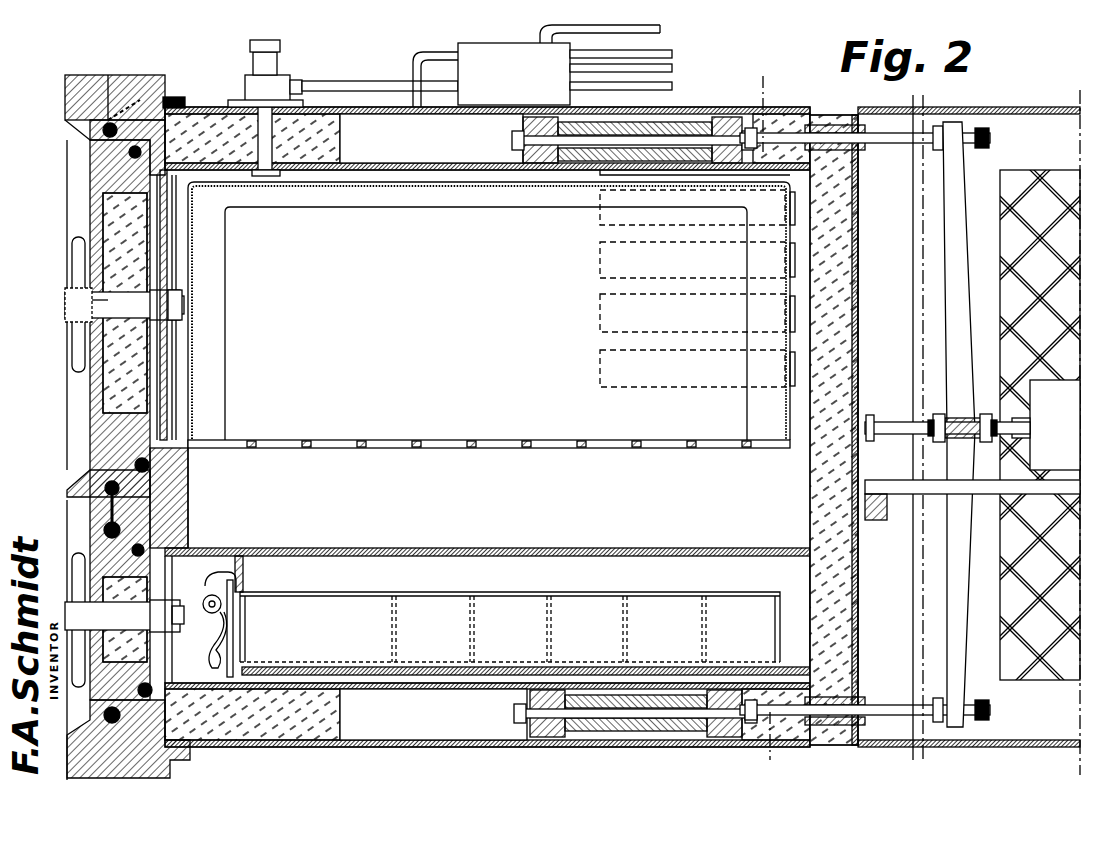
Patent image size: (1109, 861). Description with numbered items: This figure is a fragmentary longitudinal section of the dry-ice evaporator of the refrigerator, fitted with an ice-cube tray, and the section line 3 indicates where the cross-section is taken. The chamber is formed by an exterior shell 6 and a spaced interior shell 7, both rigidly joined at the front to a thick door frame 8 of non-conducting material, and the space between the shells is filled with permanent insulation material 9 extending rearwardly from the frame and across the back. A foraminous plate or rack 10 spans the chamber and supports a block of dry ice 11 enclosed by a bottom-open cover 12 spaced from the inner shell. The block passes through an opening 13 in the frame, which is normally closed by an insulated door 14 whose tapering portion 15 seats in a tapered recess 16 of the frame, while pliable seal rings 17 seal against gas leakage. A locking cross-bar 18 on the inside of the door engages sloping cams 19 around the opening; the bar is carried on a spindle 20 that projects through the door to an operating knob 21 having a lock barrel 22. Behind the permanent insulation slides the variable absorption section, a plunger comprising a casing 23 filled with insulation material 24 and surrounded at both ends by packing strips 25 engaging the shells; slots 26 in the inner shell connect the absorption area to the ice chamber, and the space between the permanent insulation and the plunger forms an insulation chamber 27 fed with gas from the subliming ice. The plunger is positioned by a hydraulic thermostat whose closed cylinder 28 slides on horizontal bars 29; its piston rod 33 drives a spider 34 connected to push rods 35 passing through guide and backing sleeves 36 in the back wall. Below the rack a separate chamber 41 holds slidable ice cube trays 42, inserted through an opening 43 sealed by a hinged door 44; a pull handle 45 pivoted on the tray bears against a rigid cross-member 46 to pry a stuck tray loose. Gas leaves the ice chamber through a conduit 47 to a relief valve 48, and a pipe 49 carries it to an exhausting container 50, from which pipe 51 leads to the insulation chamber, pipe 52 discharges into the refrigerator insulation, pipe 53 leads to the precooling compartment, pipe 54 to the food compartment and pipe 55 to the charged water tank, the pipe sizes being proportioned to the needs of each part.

The section line 3 is at (766, 420).
The exterior shell 6 is at (357, 114).
The interior shell 7 is at (362, 176).
The door frame 8 is at (190, 516).
The insulation material 9 is at (302, 172).
The foraminous plate or rack 10 is at (493, 450).
The block of dry ice 11 is at (418, 395).
The cover 12 is at (466, 188).
The opening 13 is at (188, 402).
The insulated door 14 is at (110, 432).
The tapering portion 15 is at (128, 148).
The tapered recess 16 is at (160, 85).
The seal rings 17 is at (108, 132).
The locking cross-bar 18 is at (165, 282).
The sloping ledges or cams 19 is at (168, 342).
The spindle 20 is at (106, 318).
The operating knob or handle 21 is at (78, 272).
The lock barrel 22 is at (70, 308).
The casing 23 is at (598, 173).
The insulation material 24 is at (516, 130).
The insulation packing strips 25 is at (523, 107).
The slots 26 is at (620, 279).
The insulation chamber 27 is at (428, 150).
The closed cylinder 28 is at (1045, 448).
The horizontal bars 29 is at (905, 494).
The piston rod 33 is at (992, 420).
The spider 34 is at (960, 690).
The push rods 35 is at (882, 132).
The guide and backing sleeves 36 is at (862, 152).
The separate chamber 41 is at (418, 597).
The ice cube trays 42 is at (505, 610).
The opening 43 is at (160, 584).
The hinged door 44 is at (102, 556).
The pull handle 45 is at (212, 640).
The cross-member 46 is at (244, 578).
The conduit 47 is at (263, 178).
The relief valve 48 is at (282, 72).
The pipe 49 is at (345, 80).
The exhausting container 50 is at (490, 58).
The pipe 51 is at (412, 70).
The pipe 52 is at (674, 86).
The pipe 53 is at (556, 32).
The pipe 54 is at (674, 67).
The pipe 55 is at (674, 53).